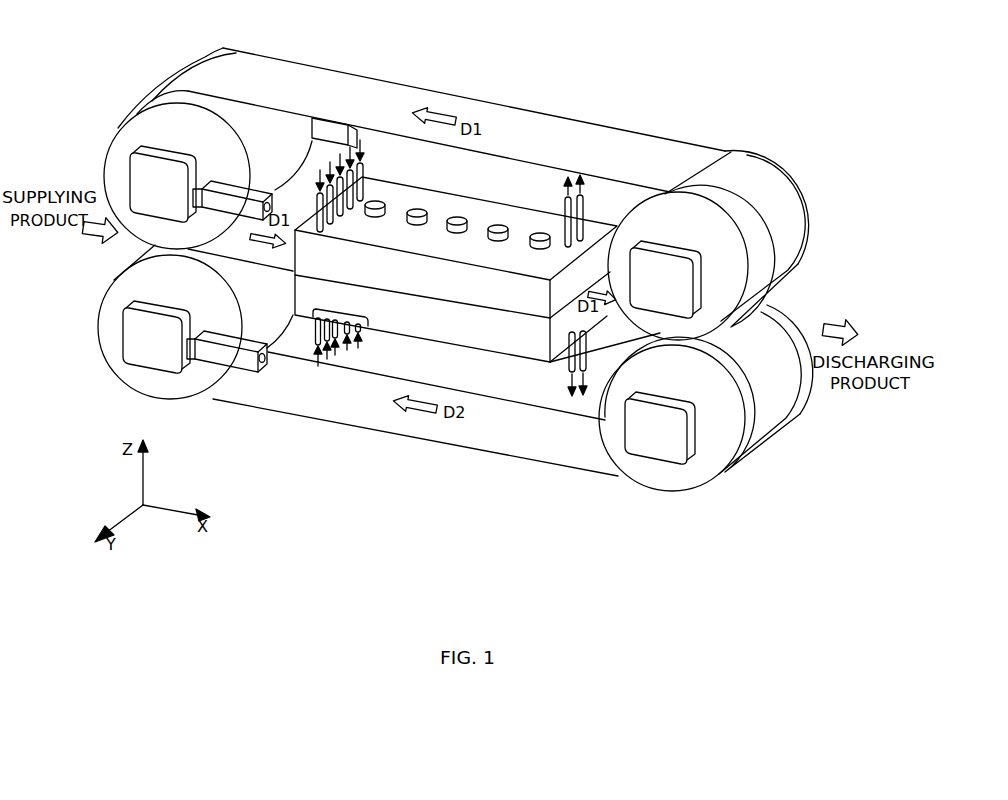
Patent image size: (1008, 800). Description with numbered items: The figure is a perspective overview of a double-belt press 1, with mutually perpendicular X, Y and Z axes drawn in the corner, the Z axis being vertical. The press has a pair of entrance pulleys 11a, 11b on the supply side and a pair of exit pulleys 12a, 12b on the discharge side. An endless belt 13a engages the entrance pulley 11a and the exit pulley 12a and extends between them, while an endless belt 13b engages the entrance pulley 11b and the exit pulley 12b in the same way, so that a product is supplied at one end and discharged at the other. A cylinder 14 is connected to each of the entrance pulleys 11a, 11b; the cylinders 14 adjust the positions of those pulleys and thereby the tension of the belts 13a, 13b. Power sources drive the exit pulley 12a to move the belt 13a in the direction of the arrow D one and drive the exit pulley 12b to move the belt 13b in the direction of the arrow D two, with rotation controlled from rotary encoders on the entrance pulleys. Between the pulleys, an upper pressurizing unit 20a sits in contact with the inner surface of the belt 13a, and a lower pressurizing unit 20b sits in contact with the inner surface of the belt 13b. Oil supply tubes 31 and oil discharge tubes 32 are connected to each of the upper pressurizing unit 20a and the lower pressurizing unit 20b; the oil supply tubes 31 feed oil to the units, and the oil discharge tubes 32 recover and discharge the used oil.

The double-belt press 1 is at (662, 80).
The entrance pulley 11a is at (118, 128).
The entrance pulley 11b is at (118, 292).
The exit pulley 12a is at (787, 165).
The exit pulley 12b is at (700, 475).
The endless belt 13a is at (488, 122).
The endless belt 13b is at (528, 440).
The cylinder 14 is at (328, 133).
The upper pressurizing unit 20a is at (450, 203).
The lower pressurizing unit 20b is at (470, 328).
The oil supply tube 31 is at (330, 208).
The oil discharge tube 32 is at (564, 200).